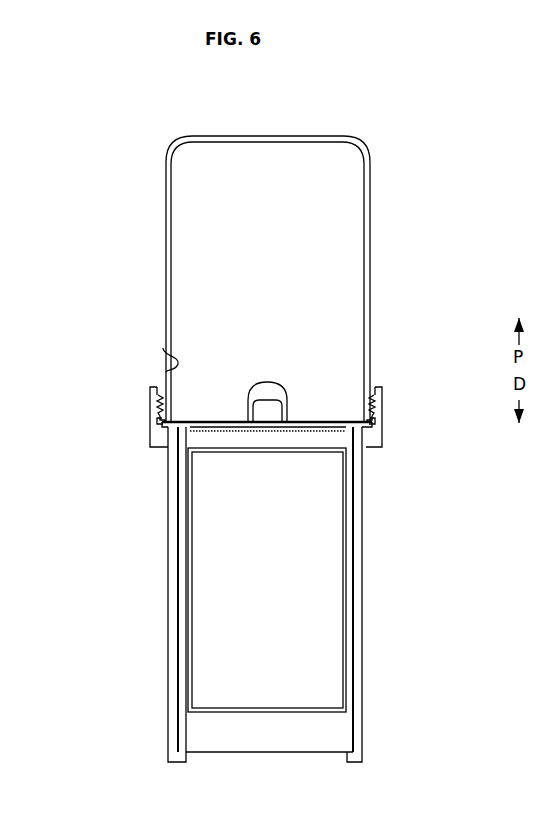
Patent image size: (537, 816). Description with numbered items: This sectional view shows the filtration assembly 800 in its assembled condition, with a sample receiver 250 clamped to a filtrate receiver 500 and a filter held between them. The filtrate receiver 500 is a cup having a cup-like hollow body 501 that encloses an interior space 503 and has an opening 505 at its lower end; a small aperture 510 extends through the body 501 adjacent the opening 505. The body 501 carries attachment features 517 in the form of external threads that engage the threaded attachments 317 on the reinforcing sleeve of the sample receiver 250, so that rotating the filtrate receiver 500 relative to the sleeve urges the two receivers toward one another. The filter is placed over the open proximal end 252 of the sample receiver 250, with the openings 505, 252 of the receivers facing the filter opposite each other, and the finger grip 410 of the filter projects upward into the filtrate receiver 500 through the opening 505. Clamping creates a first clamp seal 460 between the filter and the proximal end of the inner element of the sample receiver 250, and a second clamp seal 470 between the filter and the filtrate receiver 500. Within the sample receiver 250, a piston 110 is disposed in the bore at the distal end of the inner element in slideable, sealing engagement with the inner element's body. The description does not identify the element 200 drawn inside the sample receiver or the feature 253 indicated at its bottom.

The filtration assembly 800 is at (261, 422).
The filtrate receiver 500 is at (238, 252).
The cup-like hollow body 501 is at (300, 145).
The interior space 503 is at (243, 176).
The small aperture 510 is at (165, 352).
The finger grip 410 is at (272, 397).
The sample receiver 250 is at (261, 527).
The opening 505 is at (292, 412).
The piston 110 is at (313, 728).
The inner component 200 is at (275, 595).
The housing bottom 253 is at (370, 741).
The open proximal end 252 is at (255, 396).
The attachment features 517 is at (158, 385).
The threaded attachments 317 is at (153, 403).
The second clamp seal 470 is at (155, 417).
The first clamp seal 460 is at (172, 432).